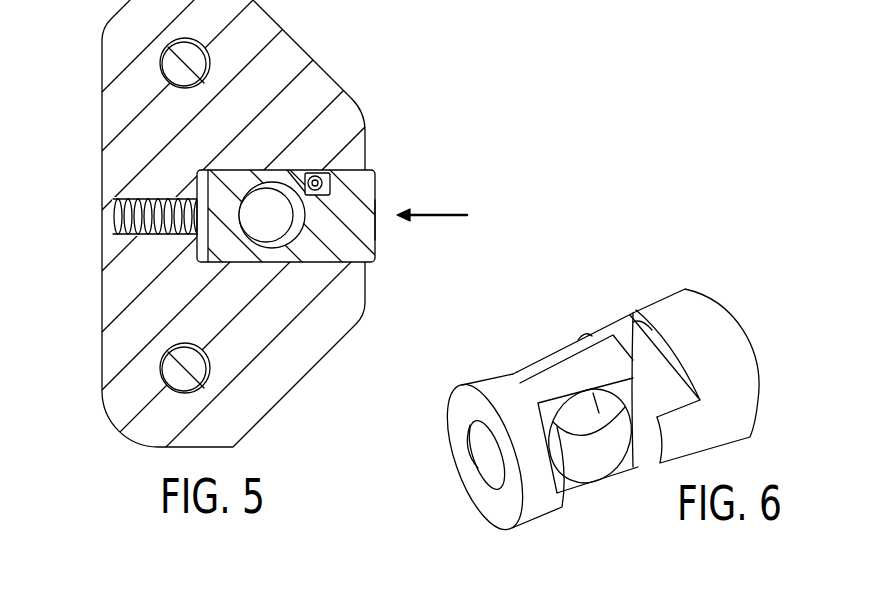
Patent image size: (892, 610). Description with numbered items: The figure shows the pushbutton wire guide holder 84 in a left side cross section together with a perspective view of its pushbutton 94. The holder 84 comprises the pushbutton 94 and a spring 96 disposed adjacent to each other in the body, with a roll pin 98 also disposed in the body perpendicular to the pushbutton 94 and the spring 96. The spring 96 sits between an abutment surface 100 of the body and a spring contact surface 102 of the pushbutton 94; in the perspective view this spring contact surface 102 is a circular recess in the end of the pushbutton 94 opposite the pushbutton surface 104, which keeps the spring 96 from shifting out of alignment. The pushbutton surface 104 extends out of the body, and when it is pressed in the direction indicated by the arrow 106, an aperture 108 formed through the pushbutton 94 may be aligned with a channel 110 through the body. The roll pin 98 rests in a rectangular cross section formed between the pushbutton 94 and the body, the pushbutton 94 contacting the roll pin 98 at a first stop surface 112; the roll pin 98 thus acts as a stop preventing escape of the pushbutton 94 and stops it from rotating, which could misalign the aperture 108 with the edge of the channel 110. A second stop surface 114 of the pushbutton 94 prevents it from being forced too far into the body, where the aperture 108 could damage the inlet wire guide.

In FIG. 5, the pushbutton wire guide holder 84 is at (383, 77).
In FIG. 5, the pushbutton 94 is at (298, 220).
In FIG. 6, the pushbutton 94 is at (611, 369).
In FIG. 5, the spring 96 is at (138, 200).
In FIG. 5, the roll pin 98 is at (323, 168).
In FIG. 5, the abutment surface 100 is at (115, 215).
In FIG. 5, the spring contact surface 102 is at (210, 240).
In FIG. 6, the spring contact surface 102 is at (490, 457).
In FIG. 5, the pushbutton surface 104 is at (375, 242).
In FIG. 6, the pushbutton surface 104 is at (745, 345).
In FIG. 5, the arrow 106 is at (440, 217).
In FIG. 5, the aperture 108 is at (303, 250).
In FIG. 6, the aperture 108 is at (587, 453).
In FIG. 5, the channel 110 is at (295, 212).
In FIG. 5, the first stop surface 112 is at (290, 172).
In FIG. 6, the first stop surface 112 is at (627, 330).
In FIG. 5, the second stop surface 114 is at (333, 181).
In FIG. 6, the second stop surface 114 is at (637, 322).